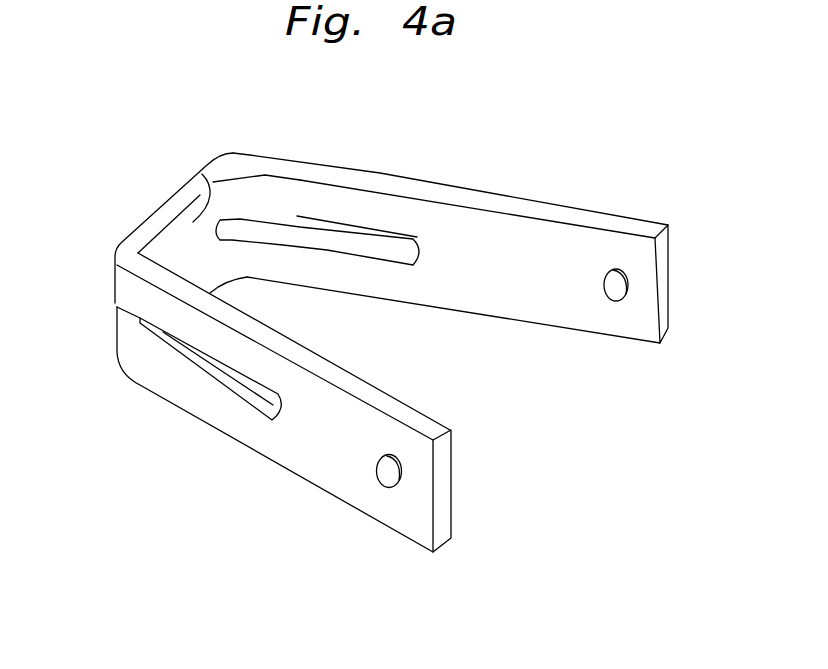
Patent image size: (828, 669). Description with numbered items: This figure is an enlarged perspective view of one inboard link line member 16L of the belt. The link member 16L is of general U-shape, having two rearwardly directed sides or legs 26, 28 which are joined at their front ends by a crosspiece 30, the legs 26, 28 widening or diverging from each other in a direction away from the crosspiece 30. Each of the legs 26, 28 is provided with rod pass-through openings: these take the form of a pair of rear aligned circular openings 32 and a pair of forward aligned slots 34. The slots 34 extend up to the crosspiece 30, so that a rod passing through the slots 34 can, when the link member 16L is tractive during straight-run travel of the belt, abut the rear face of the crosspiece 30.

The inboard link line member 16L is at (313, 163).
The leg 26 is at (250, 428).
The leg 28 is at (477, 223).
The crosspiece 30 is at (202, 174).
The rear aligned circular opening 32 is at (613, 285).
The forward aligned slot 34 is at (340, 236).